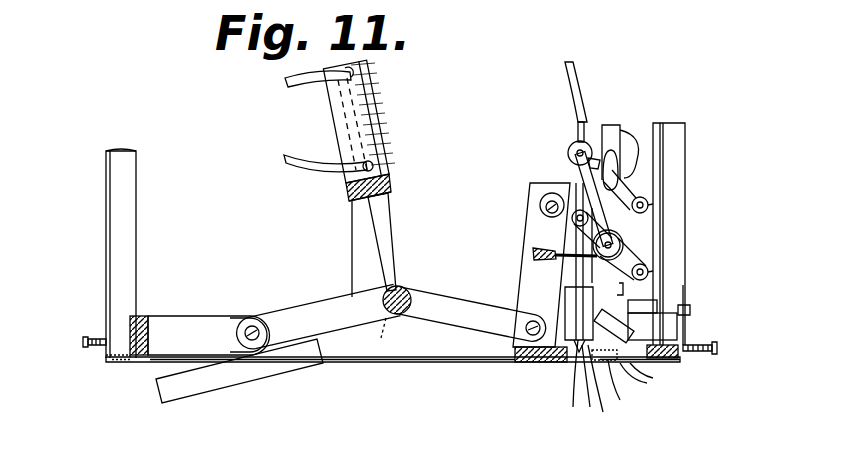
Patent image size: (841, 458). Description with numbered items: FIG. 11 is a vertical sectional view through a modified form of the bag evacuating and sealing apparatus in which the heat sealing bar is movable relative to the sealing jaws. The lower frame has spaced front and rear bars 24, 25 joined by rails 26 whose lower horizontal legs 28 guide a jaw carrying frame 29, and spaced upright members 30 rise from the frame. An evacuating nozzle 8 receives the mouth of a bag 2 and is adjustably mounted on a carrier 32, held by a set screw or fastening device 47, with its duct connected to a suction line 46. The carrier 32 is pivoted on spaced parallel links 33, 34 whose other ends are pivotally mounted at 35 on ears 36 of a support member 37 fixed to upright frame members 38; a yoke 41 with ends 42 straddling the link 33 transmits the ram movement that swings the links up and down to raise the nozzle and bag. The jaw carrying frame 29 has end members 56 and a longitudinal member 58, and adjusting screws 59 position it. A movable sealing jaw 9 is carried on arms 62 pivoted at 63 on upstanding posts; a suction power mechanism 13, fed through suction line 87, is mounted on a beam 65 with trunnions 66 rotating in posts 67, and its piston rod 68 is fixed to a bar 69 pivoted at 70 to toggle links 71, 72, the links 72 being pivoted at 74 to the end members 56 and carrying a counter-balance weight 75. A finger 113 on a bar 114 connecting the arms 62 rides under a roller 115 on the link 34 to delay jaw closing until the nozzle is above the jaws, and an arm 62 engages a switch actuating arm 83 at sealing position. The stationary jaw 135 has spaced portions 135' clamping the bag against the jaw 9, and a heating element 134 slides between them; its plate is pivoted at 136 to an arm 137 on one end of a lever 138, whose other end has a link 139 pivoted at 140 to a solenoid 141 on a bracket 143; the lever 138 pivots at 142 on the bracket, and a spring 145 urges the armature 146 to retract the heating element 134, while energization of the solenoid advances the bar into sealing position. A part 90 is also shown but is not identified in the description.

The bag 2 is at (567, 400).
The evacuating nozzle 8 is at (565, 305).
The sealing jaw 9 is at (520, 362).
The suction power mechanism 13 is at (370, 97).
The front member 24 is at (664, 374).
The rear member 25 is at (106, 358).
The rail 26 is at (357, 362).
The lower horizontal legs 28 is at (120, 362).
The jaw carrying frame 29 is at (207, 316).
The upright members 30 is at (134, 170).
The carrier 32 is at (570, 172).
The parallel link 33 is at (628, 180).
The parallel link 34 is at (633, 252).
The pivotal mounting 35 is at (653, 203).
The ears 36 is at (684, 177).
The support member 37 is at (670, 123).
The upright frame members 38 is at (678, 148).
The yoke 41 is at (615, 130).
The yoke ends 42 is at (617, 150).
The suction line 46 is at (578, 88).
The fastening device 47 is at (565, 178).
The end members 56 is at (228, 325).
The longitudinal member 58 is at (140, 316).
The adjusting screws 59 is at (83, 341).
The arms 62 is at (543, 200).
The pivotal mounting 63 is at (547, 208).
The beam 65 is at (391, 181).
The trunnions 66 is at (350, 193).
The posts 67 is at (352, 221).
The piston rod 68 is at (382, 218).
The bar 69 is at (382, 301).
The pivotal mounting 70 is at (382, 337).
The toggle link 71 is at (437, 310).
The toggle link 72 is at (318, 312).
The pivotal connection 74 is at (259, 336).
The counter-balance weight 75 is at (233, 379).
The switch actuating arm 83 is at (519, 329).
The suction line 87 is at (309, 167).
The hook 90 is at (303, 85).
The finger 113 is at (572, 223).
The bar 114 is at (533, 259).
The roller 115 is at (622, 245).
The heating element 134 is at (578, 372).
The jaw 135 is at (604, 393).
The spaced portions 135' is at (635, 387).
The pivotal connection 136 is at (634, 379).
The arm 137 is at (659, 382).
The lever 138 is at (647, 360).
The link 139 is at (652, 326).
The pivotal connection 140 is at (637, 298).
The solenoid 141 is at (701, 306).
The pivotal mounting 142 is at (614, 326).
The bracket 143 is at (683, 333).
The spring 145 is at (683, 317).
The armature 146 is at (688, 310).